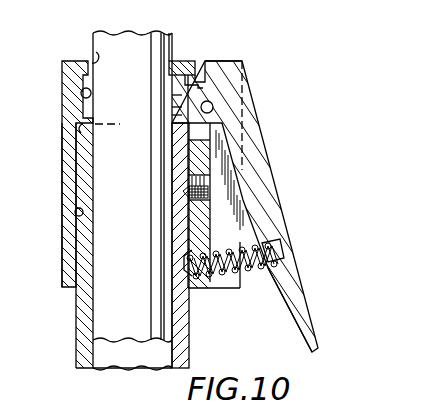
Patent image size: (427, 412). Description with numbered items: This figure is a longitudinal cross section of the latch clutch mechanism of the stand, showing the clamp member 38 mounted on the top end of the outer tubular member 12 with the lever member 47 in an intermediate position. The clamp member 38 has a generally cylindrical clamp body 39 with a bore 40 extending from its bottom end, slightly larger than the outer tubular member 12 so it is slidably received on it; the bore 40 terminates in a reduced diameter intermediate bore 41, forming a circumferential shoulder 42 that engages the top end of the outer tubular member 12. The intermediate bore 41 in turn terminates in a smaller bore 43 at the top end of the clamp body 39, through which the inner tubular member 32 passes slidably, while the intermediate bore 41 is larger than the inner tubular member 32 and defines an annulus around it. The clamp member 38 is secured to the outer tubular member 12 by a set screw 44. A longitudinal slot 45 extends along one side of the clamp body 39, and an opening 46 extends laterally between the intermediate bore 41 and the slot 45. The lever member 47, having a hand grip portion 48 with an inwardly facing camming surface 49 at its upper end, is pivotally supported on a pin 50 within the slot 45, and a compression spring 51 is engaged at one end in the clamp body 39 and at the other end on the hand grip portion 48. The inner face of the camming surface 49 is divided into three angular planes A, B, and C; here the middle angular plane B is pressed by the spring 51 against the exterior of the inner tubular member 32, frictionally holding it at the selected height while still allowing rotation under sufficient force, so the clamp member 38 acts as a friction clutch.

The outer tubular member 12 is at (76, 326).
The inner tubular member 32 is at (127, 50).
The clamp member 38 is at (54, 168).
The clamp body 39 is at (62, 242).
The bore 40 is at (76, 210).
The intermediate bore 41 is at (81, 93).
The shoulder 42 is at (80, 129).
The smaller bore 43 is at (96, 52).
The set screw 44 is at (210, 188).
The longitudinal slot 45 is at (237, 223).
The opening 46 is at (203, 72).
The lever member 47 is at (257, 146).
The hand grip portion 48 is at (290, 318).
The camming surface 49 is at (200, 93).
The pin 50 is at (214, 107).
The compression spring 51 is at (232, 275).
The angular plane A is at (172, 95).
The middle angular plane B is at (172, 107).
The angular plane C is at (172, 115).